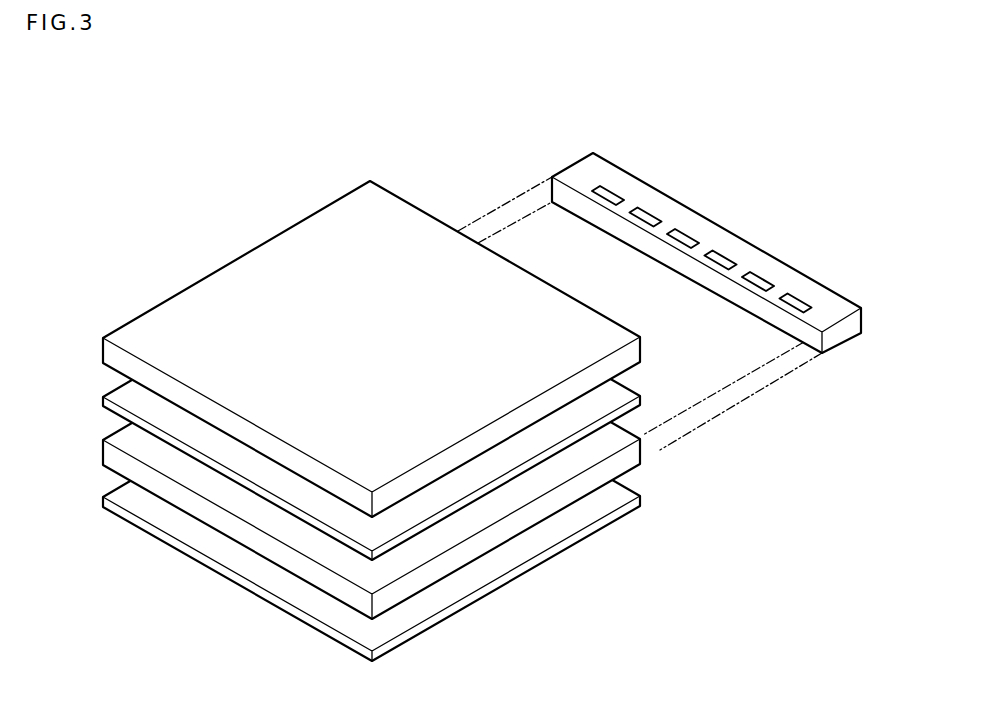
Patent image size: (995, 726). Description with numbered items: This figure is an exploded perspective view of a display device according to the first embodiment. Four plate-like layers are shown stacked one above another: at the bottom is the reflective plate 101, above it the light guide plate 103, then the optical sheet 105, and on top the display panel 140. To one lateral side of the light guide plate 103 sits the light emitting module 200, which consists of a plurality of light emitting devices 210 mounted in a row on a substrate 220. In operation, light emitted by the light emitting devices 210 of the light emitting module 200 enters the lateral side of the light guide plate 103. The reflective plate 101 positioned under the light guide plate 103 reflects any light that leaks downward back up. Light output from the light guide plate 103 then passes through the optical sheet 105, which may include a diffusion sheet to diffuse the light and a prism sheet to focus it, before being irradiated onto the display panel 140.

The reflective plate 101 is at (103, 503).
The light guide plate 103 is at (103, 452).
The optical sheet 105 is at (103, 402).
The display panel 140 is at (103, 353).
The light emitting module 200 is at (712, 219).
The light emitting devices 210 is at (795, 300).
The substrate 220 is at (838, 303).